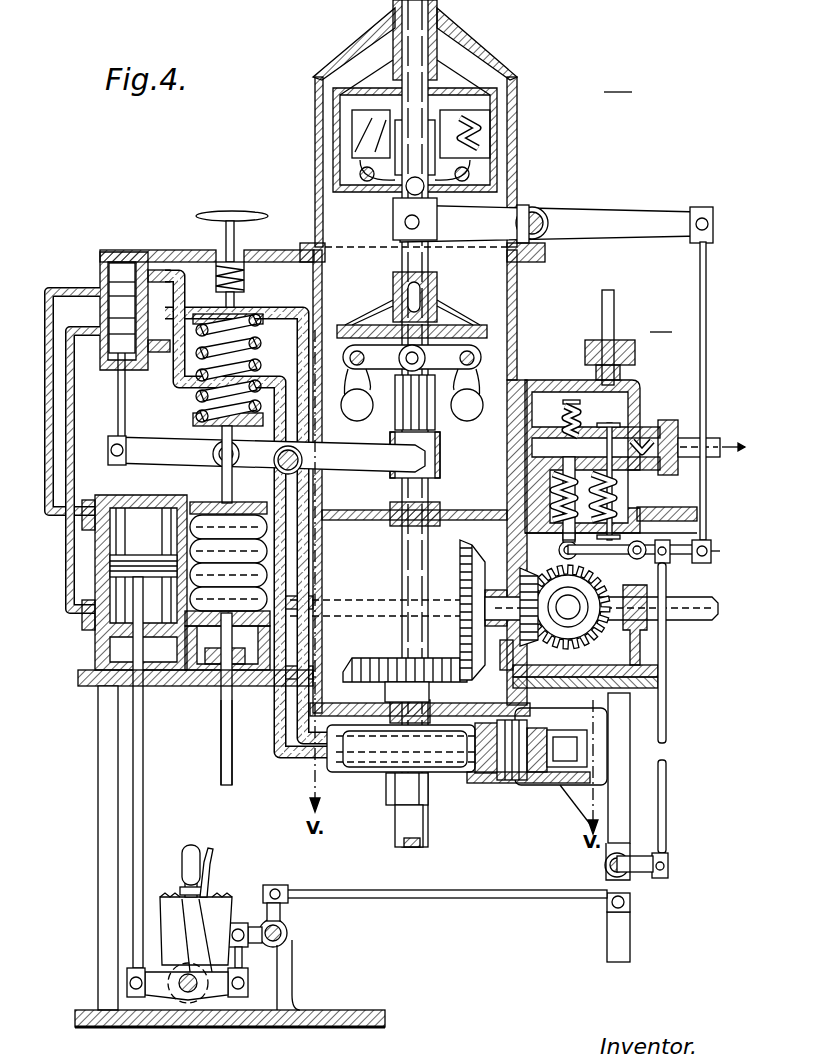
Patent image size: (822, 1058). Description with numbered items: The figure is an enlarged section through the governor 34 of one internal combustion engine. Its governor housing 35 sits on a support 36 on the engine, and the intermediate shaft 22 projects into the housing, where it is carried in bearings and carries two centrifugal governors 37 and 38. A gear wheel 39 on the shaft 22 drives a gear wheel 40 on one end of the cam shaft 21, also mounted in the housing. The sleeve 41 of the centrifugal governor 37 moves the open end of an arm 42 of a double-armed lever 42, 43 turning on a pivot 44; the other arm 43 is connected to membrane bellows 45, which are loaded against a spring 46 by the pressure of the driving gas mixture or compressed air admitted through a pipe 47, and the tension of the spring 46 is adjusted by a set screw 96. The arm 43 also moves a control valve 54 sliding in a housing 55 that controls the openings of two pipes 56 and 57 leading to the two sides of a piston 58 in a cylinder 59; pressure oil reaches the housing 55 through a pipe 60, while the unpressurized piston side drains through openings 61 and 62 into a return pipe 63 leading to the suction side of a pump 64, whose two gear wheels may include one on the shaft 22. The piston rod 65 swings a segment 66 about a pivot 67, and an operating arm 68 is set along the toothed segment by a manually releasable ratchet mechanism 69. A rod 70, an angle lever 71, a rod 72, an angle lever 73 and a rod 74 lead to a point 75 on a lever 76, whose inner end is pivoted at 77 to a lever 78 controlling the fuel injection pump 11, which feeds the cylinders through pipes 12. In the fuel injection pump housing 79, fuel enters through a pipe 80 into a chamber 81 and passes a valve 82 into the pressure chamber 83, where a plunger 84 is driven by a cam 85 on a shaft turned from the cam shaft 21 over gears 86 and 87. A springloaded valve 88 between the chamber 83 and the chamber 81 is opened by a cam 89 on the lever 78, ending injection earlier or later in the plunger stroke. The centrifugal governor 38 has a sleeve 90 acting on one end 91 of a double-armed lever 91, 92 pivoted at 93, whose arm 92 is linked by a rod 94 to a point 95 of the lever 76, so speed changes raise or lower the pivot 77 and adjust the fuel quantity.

The fuel injection pump 11 is at (663, 322).
The pipes 12 is at (716, 446).
The cam shaft 21 is at (672, 616).
The intermediate shaft 22 is at (401, 569).
The governor 34 is at (618, 82).
The governor housing 35 is at (517, 294).
The support 36 is at (97, 710).
The centrifugal governor 37 is at (340, 325).
The centrifugal governor 38 is at (470, 88).
The gear wheel 39 is at (372, 668).
The gear wheel 40 is at (462, 569).
The sleeve 41 is at (437, 468).
The arm 42 is at (368, 462).
The arm 43 is at (155, 450).
The pivot 44 is at (298, 468).
The membrane bellows 45 is at (203, 500).
The spring 46 is at (228, 340).
The pipe 47 is at (224, 727).
The control valve 54 is at (104, 290).
The housing 55 is at (104, 262).
The pipe 56 is at (44, 400).
The pipe 57 is at (75, 398).
The piston 58 is at (95, 615).
The cylinder 59 is at (95, 640).
The pipe 60 is at (214, 308).
The opening 61 is at (165, 270).
The opening 62 is at (165, 354).
The return pipe 63 is at (183, 388).
The pump 64 is at (455, 775).
The piston rod 65 is at (144, 718).
The segment 66 is at (225, 903).
The pivot 67 is at (190, 994).
The operating arm 68 is at (182, 900).
The ratchet mechanism 69 is at (212, 862).
The rod 70 is at (250, 958).
The angle lever 71 is at (288, 914).
The rod 72 is at (300, 890).
The angle lever 73 is at (608, 880).
The rod 74 is at (667, 668).
The point 75 is at (666, 562).
The lever 76 is at (704, 562).
The pivot 77 is at (637, 559).
The lever 78 is at (598, 553).
The fuel injection pump housing 79 is at (645, 428).
The pipe 80 is at (601, 294).
The chamber 81 is at (592, 400).
The valve 82 is at (585, 418).
The pressure chamber 83 is at (546, 445).
The plunger 84 is at (562, 534).
The cam 85 is at (556, 580).
The gear 86 is at (535, 678).
The gear 87 is at (575, 688).
The springloaded valve 88 is at (618, 426).
The cam 89 is at (642, 512).
The sleeve 90 is at (392, 220).
The end 91 is at (522, 212).
The arm 92 is at (583, 218).
The pivot 93 is at (540, 214).
The rod 94 is at (706, 392).
The point 95 is at (712, 557).
The set screw 96 is at (268, 217).